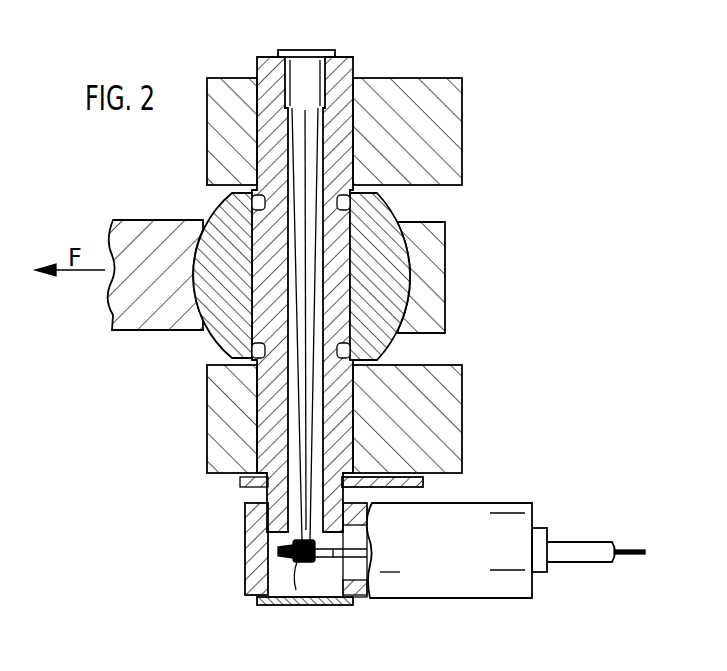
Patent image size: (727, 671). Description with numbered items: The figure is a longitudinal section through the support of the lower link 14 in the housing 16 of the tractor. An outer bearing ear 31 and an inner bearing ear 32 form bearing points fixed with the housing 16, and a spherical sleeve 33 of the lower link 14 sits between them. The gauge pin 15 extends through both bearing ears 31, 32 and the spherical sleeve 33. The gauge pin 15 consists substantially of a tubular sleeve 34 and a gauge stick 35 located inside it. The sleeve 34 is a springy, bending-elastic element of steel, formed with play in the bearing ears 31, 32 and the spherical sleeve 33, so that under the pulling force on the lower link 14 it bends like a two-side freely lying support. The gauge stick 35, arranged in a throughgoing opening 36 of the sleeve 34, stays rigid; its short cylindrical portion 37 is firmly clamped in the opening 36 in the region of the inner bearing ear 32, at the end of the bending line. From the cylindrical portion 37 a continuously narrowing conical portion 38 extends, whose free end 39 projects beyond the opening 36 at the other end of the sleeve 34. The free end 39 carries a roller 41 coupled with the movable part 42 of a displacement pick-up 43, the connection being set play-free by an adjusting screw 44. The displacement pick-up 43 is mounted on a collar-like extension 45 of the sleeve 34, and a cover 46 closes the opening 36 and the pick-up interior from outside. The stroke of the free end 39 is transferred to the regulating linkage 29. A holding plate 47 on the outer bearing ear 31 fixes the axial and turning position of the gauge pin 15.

The lower link 14 is at (127, 308).
The gauge pin 15 is at (359, 61).
The housing 16 is at (368, 257).
The regulating linkage 29 is at (592, 550).
The outer bearing ear 31 is at (438, 420).
The inner bearing ear 32 is at (438, 118).
The spherical sleeve 33 is at (228, 232).
The tubular sleeve 34 is at (273, 316).
The gauge stick 35 is at (326, 280).
The throughgoing opening 36 is at (317, 238).
The short cylindrical portion 37 is at (307, 66).
The conical portion 38 is at (312, 347).
The free end 39 is at (306, 565).
The roller 41 is at (296, 590).
The movable part 42 is at (334, 560).
The displacement pick-up 43 is at (445, 580).
The adjusting screw 44 is at (278, 550).
The collar-like extension 45 is at (277, 517).
The cover 46 is at (265, 602).
The holding plate 47 is at (423, 483).